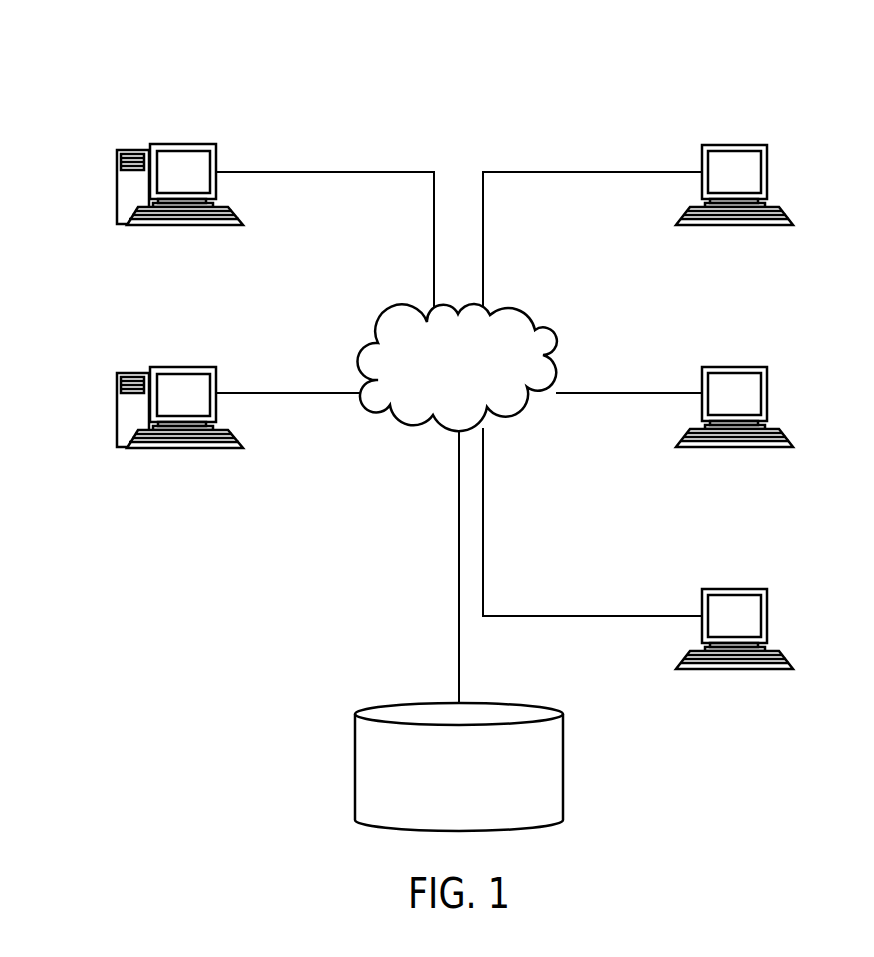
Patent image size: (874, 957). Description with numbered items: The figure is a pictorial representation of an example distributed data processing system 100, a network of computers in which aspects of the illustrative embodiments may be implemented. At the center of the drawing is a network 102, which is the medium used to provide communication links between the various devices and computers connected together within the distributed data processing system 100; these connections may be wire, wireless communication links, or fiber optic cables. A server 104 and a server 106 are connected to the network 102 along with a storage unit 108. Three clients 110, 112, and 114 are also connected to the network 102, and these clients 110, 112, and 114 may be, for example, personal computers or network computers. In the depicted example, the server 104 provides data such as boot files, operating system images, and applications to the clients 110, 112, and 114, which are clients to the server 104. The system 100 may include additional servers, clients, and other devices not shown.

The distributed data processing system 100 is at (717, 57).
The network 102 is at (378, 337).
The server 104 is at (117, 188).
The server 106 is at (117, 411).
The storage unit 108 is at (355, 768).
The client 110 is at (767, 172).
The client 112 is at (767, 393).
The client 114 is at (767, 616).